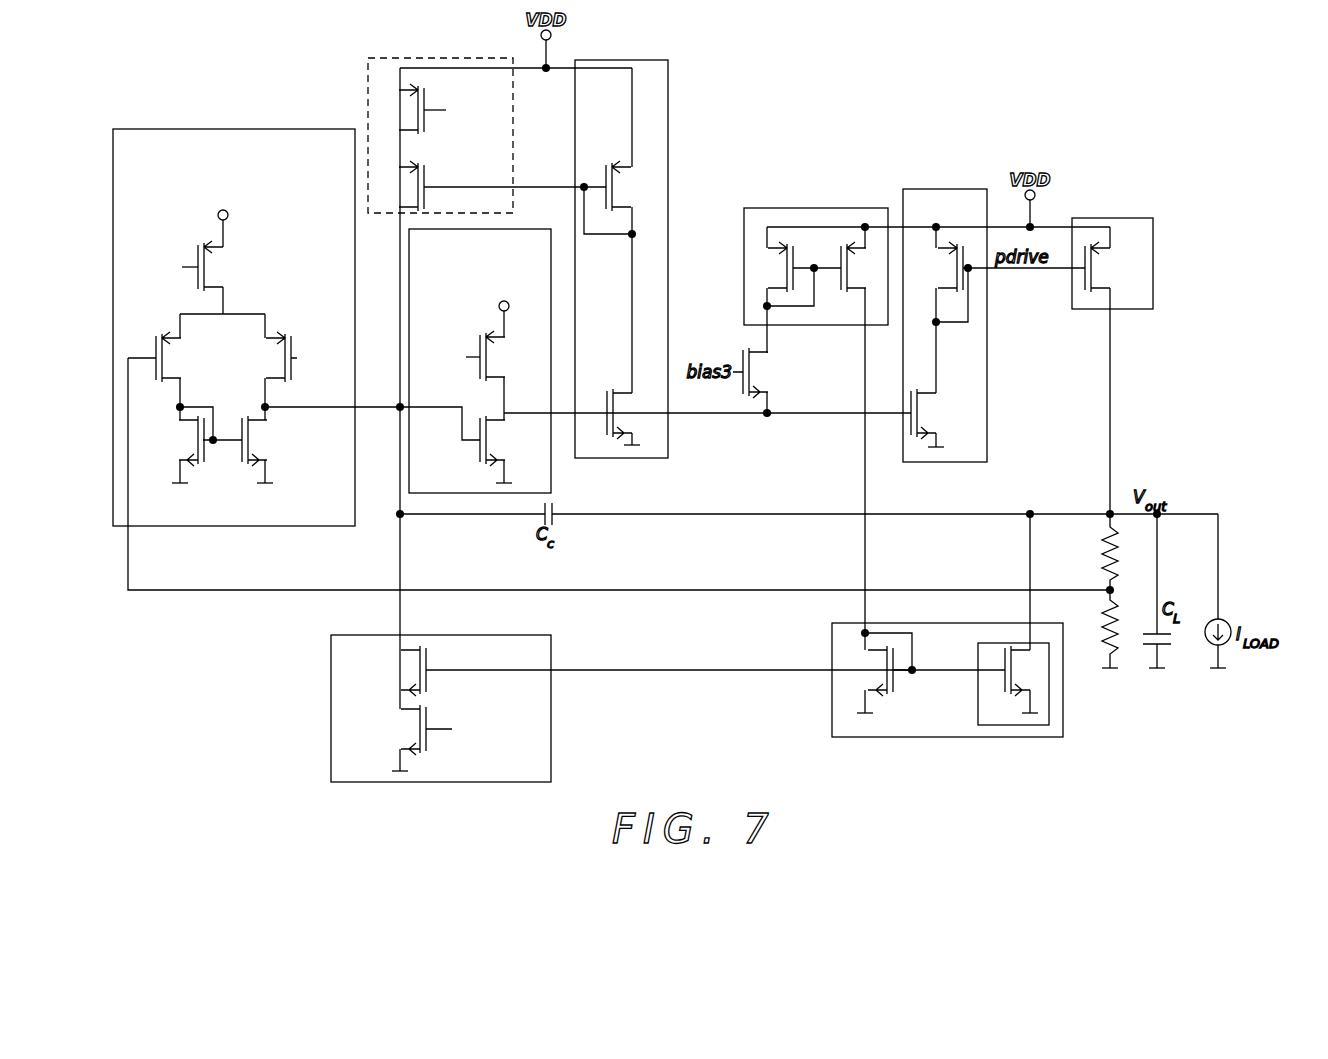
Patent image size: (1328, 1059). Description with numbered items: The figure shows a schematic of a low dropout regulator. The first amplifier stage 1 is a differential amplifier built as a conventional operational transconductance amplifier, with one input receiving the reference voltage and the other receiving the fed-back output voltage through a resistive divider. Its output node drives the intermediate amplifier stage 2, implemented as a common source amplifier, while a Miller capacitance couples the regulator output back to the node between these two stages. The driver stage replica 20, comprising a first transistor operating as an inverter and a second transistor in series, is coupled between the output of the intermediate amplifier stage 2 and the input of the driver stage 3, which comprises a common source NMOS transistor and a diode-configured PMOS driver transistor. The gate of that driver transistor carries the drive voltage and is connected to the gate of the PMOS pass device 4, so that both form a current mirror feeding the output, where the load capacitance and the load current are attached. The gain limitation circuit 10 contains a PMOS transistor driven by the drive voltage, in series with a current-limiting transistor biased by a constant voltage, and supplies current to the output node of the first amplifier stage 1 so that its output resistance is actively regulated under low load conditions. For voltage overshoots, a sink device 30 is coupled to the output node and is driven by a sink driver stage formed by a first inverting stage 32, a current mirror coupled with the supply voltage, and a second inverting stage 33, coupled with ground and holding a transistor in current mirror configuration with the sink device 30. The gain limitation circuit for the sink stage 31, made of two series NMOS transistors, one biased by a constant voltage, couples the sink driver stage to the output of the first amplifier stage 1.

The first amplification stage 1 is at (167, 129).
The intermediate amplification stage 2 is at (551, 470).
The driver stage 3 is at (940, 189).
The pass device 4 is at (1112, 218).
The gain limitation circuit 10 is at (400, 58).
The driver stage replica 20 is at (613, 60).
The sink device 30 is at (1050, 676).
The gain limitation circuit for the sink stage 31 is at (551, 712).
The first inverting stage 32 is at (765, 208).
The second inverting stage 33 is at (832, 718).